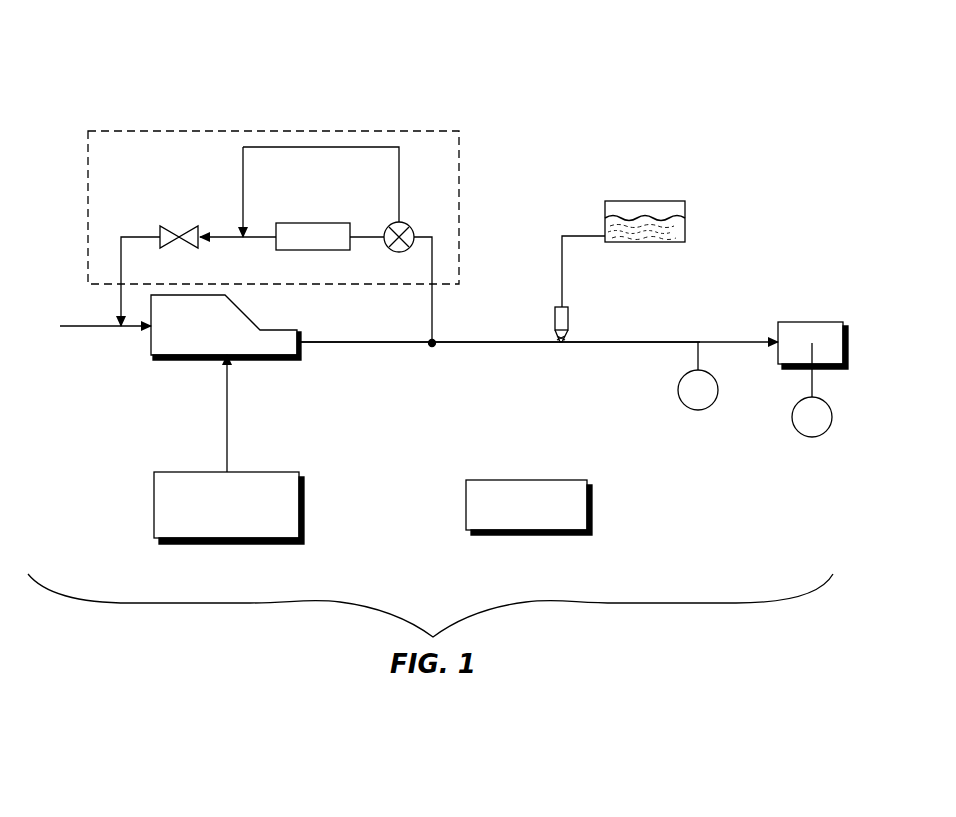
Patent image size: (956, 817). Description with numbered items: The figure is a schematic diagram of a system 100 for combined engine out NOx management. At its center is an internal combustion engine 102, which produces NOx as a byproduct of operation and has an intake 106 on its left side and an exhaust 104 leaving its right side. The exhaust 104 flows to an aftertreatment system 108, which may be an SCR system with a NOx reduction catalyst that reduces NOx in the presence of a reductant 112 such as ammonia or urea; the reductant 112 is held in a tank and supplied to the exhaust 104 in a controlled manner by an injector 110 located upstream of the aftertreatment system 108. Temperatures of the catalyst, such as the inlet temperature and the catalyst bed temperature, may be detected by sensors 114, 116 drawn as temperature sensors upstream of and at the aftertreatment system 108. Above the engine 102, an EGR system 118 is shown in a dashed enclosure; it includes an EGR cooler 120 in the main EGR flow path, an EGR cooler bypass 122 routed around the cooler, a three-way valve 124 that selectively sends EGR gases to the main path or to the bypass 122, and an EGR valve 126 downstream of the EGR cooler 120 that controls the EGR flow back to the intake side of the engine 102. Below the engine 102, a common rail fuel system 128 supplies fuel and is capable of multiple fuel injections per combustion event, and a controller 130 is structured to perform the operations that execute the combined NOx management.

The system 100 is at (152, 58).
The internal combustion engine 102 is at (216, 336).
The exhaust 104 is at (458, 343).
The intake 106 is at (92, 327).
The aftertreatment system 108 is at (806, 322).
The injector 110 is at (570, 325).
The reductant 112 is at (652, 201).
The sensor 114 is at (698, 410).
The sensor 116 is at (812, 437).
The EGR system 118 is at (232, 131).
The EGR cooler 120 is at (311, 251).
The EGR cooler bypass 122 is at (343, 148).
The three-way valve 124 is at (396, 252).
The EGR valve 126 is at (170, 228).
The common rail fuel system 128 is at (154, 505).
The controller 130 is at (528, 480).